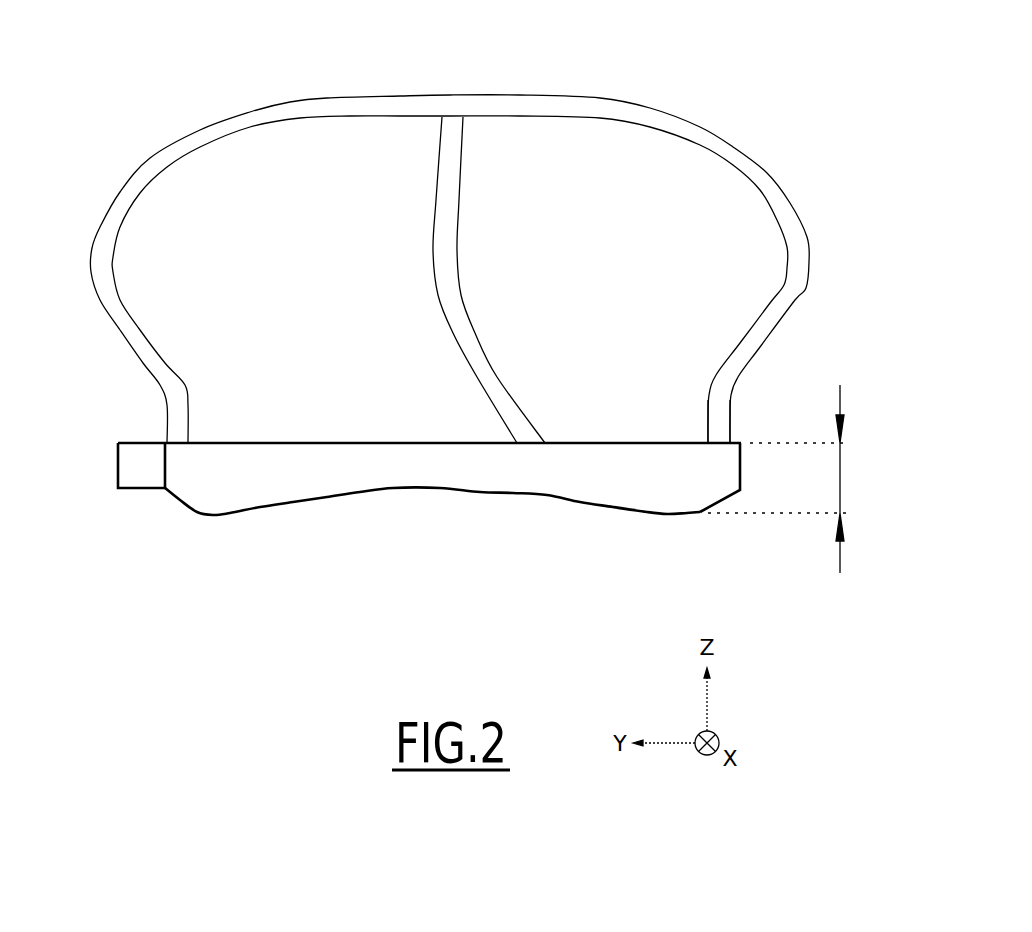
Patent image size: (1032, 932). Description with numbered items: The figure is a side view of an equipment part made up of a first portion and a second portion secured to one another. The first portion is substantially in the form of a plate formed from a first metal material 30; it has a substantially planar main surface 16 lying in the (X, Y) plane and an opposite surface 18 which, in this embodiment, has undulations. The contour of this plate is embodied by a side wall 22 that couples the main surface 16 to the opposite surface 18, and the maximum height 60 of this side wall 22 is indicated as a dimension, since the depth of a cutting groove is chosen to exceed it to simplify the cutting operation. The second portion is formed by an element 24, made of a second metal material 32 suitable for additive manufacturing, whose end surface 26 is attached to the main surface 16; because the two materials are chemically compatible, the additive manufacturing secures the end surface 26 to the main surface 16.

The main surface 16 is at (617, 443).
The opposite surface 18 is at (450, 491).
The side wall 22 is at (741, 467).
The element 24 is at (122, 190).
The end surface 26 is at (740, 443).
The first metal material 30 is at (223, 477).
The second metal material 32 is at (373, 105).
The maximum height of the side wall 60 is at (795, 479).